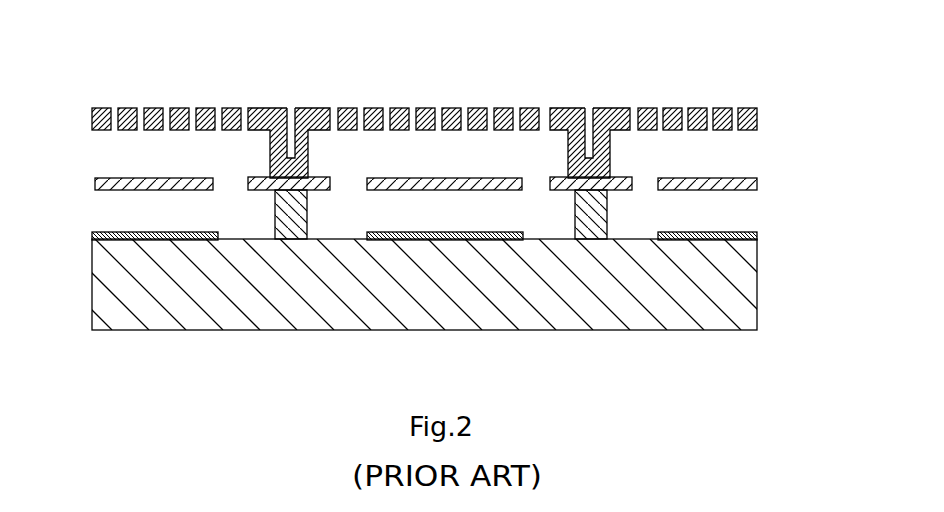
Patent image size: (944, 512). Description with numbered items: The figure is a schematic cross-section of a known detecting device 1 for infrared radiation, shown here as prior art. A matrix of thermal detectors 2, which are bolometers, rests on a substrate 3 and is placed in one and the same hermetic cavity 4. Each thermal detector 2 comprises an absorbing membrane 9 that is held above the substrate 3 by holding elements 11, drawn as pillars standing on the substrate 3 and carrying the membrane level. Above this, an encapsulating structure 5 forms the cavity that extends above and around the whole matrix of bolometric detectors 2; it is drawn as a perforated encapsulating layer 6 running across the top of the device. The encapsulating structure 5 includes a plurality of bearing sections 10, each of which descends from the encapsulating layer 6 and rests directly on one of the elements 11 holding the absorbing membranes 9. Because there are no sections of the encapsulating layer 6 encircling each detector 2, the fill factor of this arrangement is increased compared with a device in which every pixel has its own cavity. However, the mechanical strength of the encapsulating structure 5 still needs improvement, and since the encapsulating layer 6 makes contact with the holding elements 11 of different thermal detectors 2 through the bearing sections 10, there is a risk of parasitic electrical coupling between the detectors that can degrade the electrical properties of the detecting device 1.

The detecting device 1 is at (438, 182).
The thermal detector 2 is at (473, 185).
The substrate 3 is at (783, 271).
The hermetic cavity 4 is at (377, 169).
The encapsulating structure 5 is at (470, 123).
The encapsulating layer 6 is at (757, 127).
The absorbing membrane 9 is at (430, 177).
The bearing section 10 is at (300, 105).
The holding element 11 is at (270, 198).